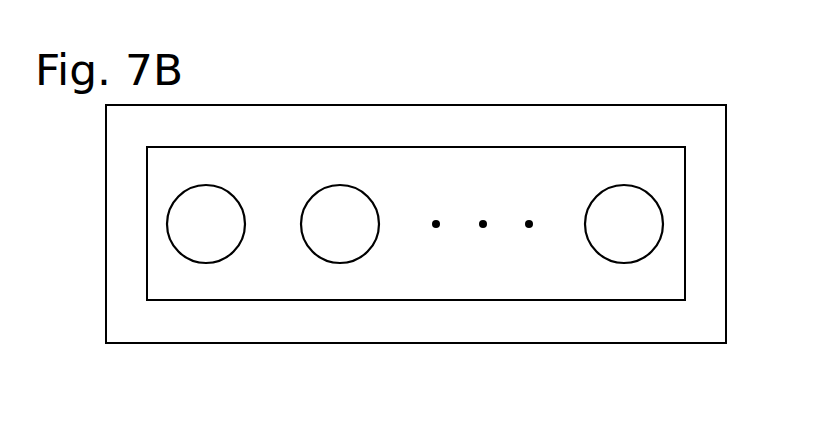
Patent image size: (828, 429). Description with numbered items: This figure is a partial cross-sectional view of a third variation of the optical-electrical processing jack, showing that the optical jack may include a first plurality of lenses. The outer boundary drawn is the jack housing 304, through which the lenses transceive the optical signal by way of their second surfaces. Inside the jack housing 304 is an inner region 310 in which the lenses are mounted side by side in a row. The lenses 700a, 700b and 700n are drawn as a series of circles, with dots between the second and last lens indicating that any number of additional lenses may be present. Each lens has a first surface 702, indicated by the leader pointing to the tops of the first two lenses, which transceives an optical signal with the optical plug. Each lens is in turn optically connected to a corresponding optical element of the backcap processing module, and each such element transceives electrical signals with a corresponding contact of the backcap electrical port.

The jack housing 304 is at (393, 137).
The region 310 is at (393, 183).
The lens 700a is at (174, 237).
The lens 700b is at (308, 237).
The lens 700n is at (592, 237).
The first surface 702 is at (340, 185).